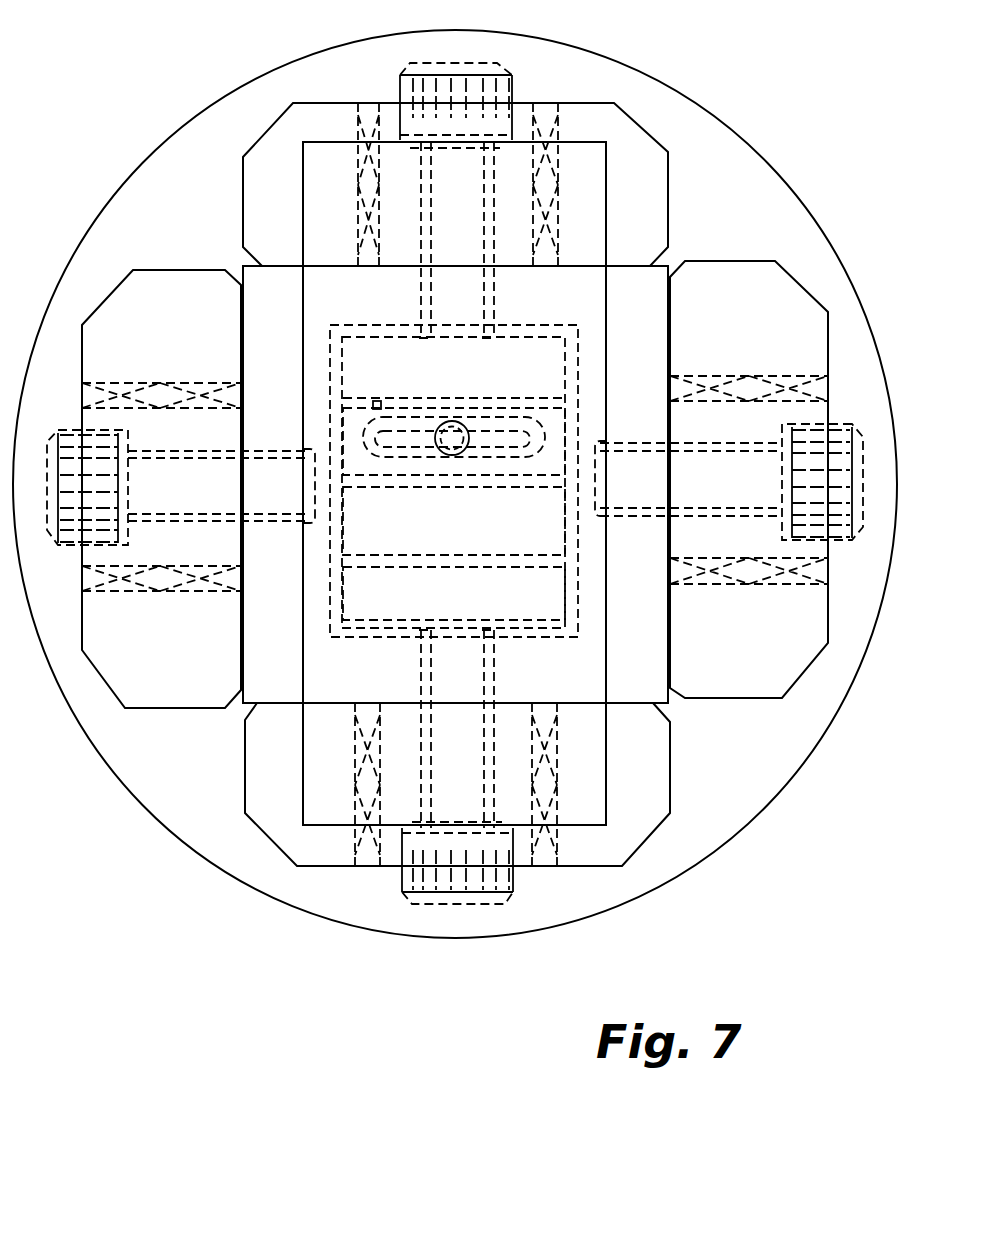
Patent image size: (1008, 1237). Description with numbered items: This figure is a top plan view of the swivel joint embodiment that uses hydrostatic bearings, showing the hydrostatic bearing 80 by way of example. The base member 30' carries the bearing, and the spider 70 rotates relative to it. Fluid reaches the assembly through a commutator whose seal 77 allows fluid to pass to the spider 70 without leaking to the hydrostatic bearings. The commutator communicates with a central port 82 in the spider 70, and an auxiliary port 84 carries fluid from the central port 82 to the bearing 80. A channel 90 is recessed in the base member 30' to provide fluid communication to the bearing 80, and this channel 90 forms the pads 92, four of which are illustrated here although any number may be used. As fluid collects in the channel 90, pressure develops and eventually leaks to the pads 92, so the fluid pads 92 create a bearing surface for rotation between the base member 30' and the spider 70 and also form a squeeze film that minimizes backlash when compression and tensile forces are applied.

The base member 30' is at (455, 475).
The hydrostatic bearing 80 is at (583, 290).
The spider 70 is at (632, 666).
The channel 90 is at (573, 340).
The pads 92 is at (508, 373).
The seal 77 is at (488, 416).
The central port 82 is at (452, 428).
The auxiliary port 84 is at (376, 400).